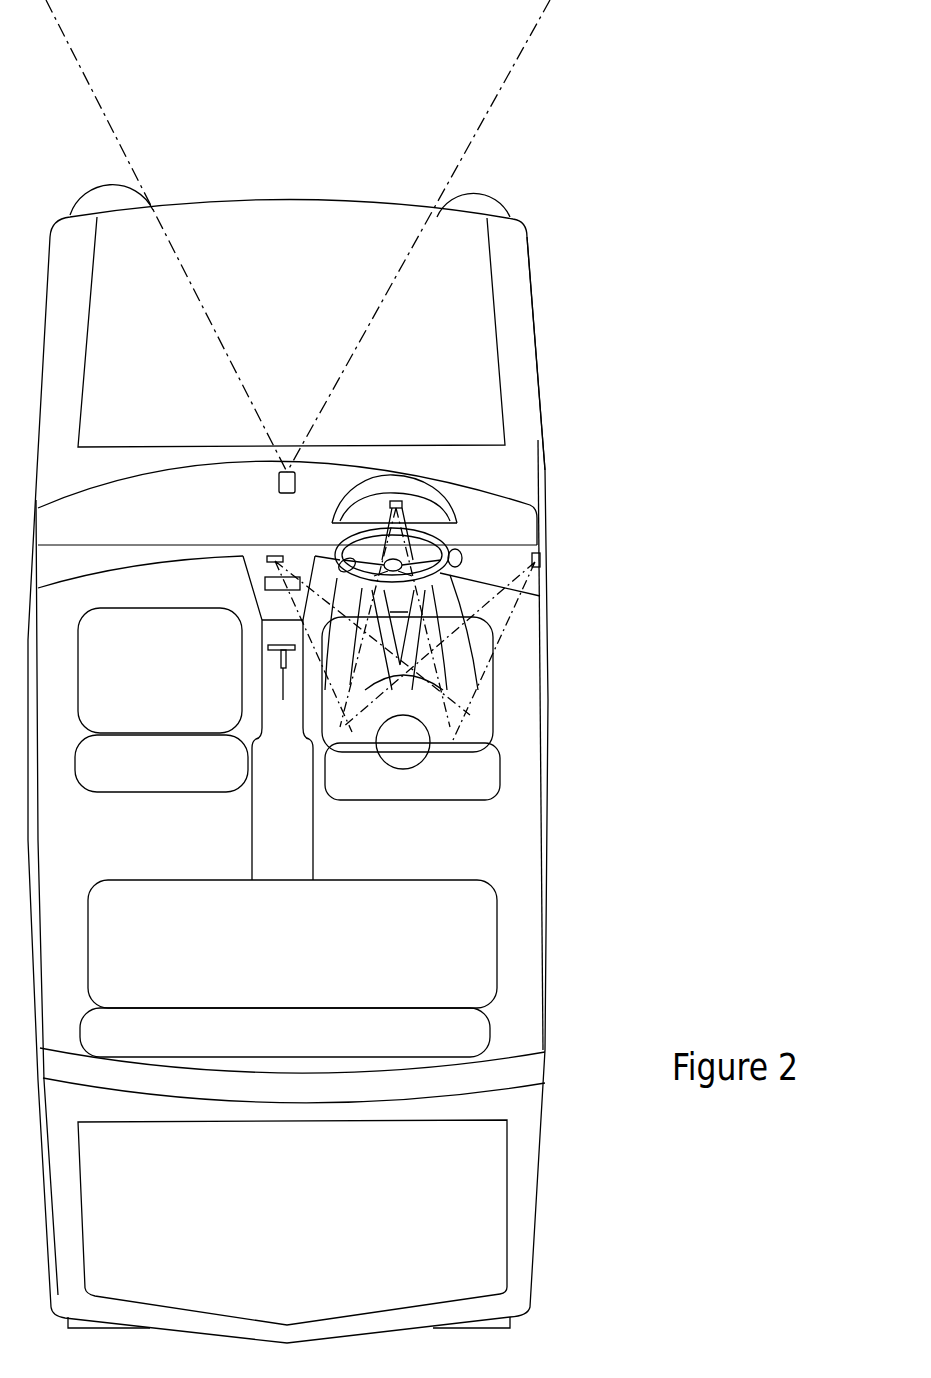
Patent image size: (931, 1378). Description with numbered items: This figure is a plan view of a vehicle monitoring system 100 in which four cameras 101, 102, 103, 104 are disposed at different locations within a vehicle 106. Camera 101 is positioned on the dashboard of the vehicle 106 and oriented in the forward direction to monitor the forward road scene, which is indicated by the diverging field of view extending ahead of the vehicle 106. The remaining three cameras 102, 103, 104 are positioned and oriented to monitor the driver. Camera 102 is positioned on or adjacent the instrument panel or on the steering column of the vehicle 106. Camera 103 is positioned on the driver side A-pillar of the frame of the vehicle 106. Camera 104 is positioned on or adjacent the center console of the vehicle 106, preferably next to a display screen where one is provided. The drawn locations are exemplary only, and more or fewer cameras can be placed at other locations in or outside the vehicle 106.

The vehicle monitoring system 100 is at (518, 515).
The camera 101 is at (280, 492).
The camera 102 is at (400, 502).
The camera 103 is at (541, 560).
The camera 104 is at (276, 556).
The vehicle 106 is at (527, 377).